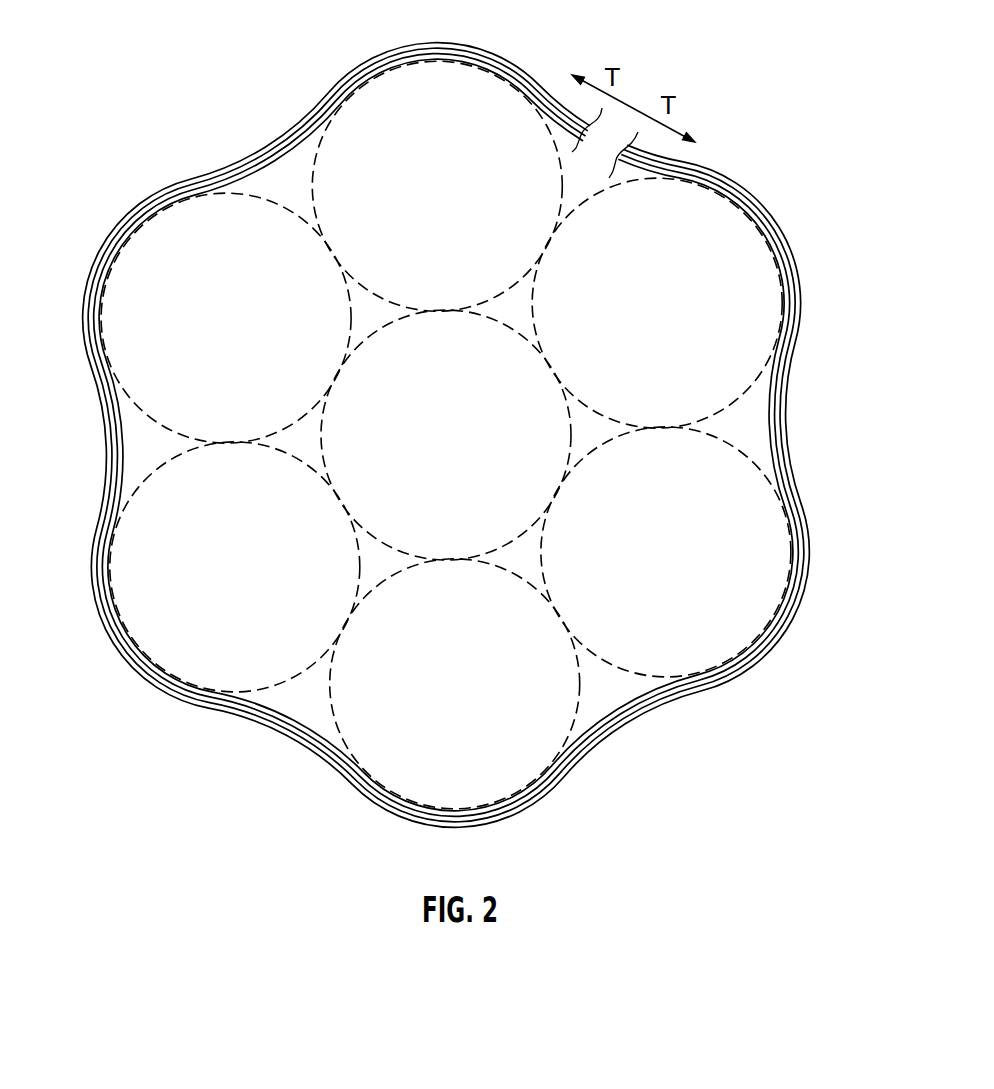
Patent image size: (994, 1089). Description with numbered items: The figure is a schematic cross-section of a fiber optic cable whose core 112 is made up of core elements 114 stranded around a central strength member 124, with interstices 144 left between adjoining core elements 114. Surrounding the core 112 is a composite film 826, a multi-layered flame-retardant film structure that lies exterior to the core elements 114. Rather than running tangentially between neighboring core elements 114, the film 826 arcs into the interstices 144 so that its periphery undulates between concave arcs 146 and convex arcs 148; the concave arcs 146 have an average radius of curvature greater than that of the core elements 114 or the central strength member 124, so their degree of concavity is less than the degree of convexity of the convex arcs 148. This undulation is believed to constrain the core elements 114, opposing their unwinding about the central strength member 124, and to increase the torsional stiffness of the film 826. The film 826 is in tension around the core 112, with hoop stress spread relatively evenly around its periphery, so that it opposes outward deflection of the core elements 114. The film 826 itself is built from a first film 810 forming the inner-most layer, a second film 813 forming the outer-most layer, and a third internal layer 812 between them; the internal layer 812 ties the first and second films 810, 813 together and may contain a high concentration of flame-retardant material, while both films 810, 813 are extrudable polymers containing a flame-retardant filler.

The core 112 is at (446, 484).
The core elements 114 is at (221, 389).
The central strength member 124 is at (463, 446).
The interstices 144 is at (748, 440).
The concave arcs 146 is at (801, 398).
The convex arcs 148 is at (92, 240).
The first film 810 is at (575, 773).
The third internal layer 812 is at (555, 780).
The second film 813 is at (534, 798).
The composite film 826 is at (150, 203).